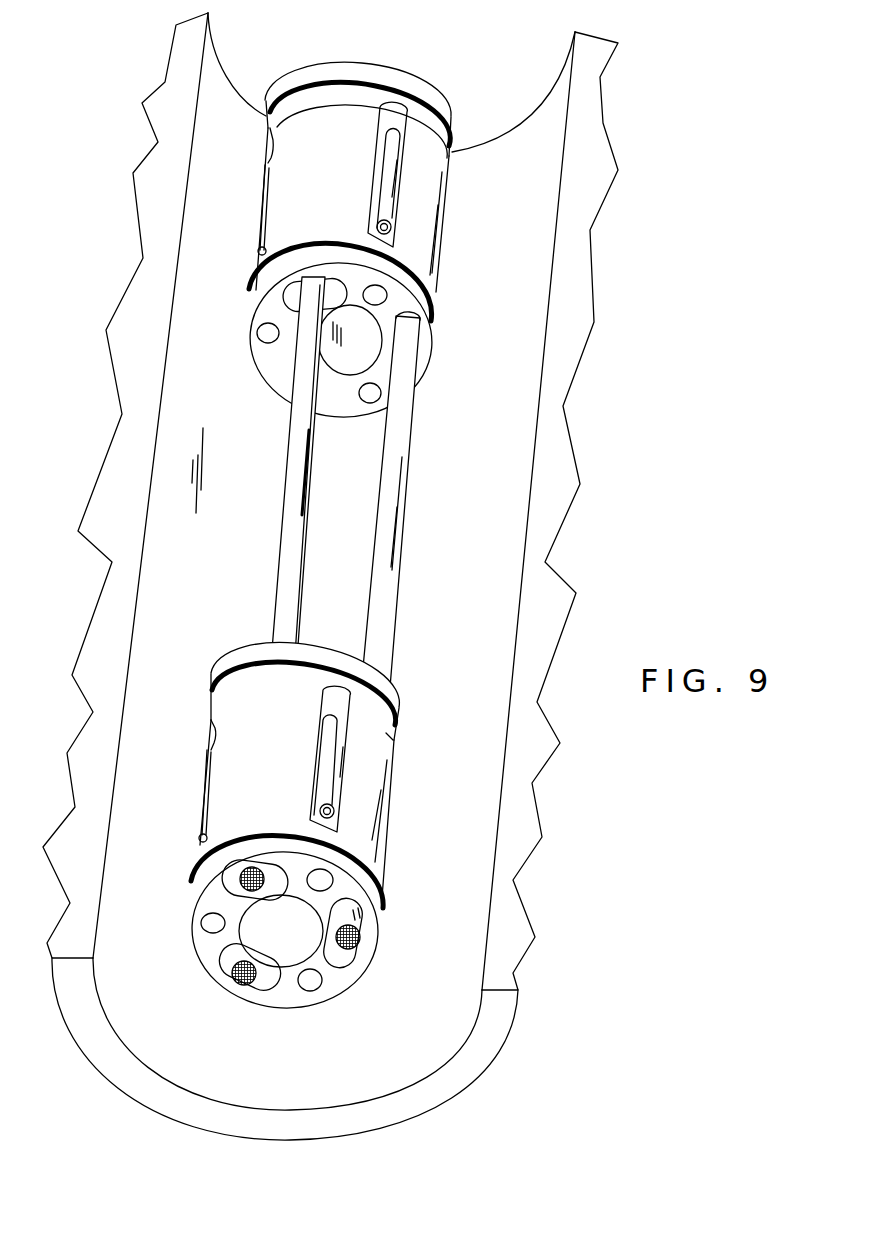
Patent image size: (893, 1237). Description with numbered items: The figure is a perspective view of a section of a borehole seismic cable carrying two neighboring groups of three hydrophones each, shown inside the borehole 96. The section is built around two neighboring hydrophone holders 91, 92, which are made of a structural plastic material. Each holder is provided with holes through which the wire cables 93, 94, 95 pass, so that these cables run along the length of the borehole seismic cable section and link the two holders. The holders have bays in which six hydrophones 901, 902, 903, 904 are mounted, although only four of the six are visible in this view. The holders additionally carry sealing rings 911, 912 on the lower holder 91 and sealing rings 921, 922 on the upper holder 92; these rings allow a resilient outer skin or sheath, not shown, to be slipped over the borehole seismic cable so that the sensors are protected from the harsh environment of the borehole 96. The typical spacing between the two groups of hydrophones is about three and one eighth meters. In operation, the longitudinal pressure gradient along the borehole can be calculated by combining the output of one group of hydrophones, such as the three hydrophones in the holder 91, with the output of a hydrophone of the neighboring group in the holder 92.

The hydrophone holder 91 is at (297, 827).
The hydrophone holder 92 is at (357, 243).
The wire cable 93 is at (278, 514).
The wire cable 94 is at (308, 497).
The wire cable 95 is at (394, 578).
The borehole 96 is at (447, 1033).
The hydrophone 901 is at (205, 762).
The hydrophone 902 is at (373, 817).
The hydrophone 903 is at (262, 246).
The hydrophone 904 is at (396, 223).
The sealing ring 911 is at (372, 903).
The sealing ring 912 is at (392, 735).
The sealing ring 921 is at (428, 320).
The sealing ring 922 is at (450, 150).